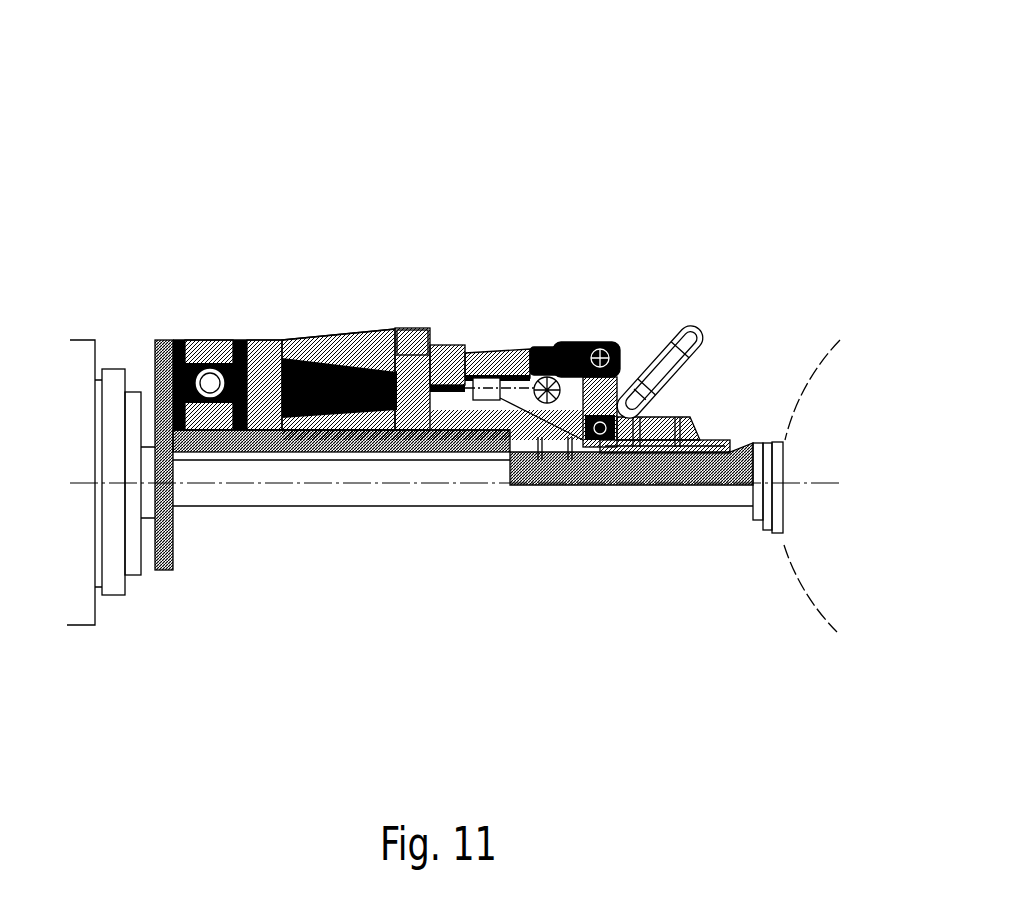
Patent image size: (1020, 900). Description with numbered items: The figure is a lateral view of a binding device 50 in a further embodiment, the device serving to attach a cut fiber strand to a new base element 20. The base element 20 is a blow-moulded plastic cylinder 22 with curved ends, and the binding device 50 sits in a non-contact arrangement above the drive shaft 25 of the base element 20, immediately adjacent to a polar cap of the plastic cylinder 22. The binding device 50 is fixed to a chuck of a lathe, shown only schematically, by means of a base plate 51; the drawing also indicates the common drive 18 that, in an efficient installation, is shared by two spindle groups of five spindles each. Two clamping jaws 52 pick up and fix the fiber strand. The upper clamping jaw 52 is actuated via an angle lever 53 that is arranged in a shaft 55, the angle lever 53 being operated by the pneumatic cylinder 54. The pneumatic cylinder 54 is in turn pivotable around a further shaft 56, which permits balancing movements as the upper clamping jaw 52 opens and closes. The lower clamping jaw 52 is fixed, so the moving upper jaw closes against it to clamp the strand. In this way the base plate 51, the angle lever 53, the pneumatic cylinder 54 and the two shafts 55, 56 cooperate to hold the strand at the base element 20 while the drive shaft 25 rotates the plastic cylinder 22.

The common drive 18 is at (73, 562).
The base element 20 is at (812, 486).
The plastic cylinder 22 is at (840, 603).
The drive shaft 25 is at (365, 495).
The binding device 50 is at (430, 150).
The base plate 51 is at (148, 355).
The clamping jaw 52 is at (693, 338).
The angle lever 53 is at (568, 342).
The pneumatic cylinder 54 is at (337, 345).
The shaft 55 is at (585, 487).
The shaft 56 is at (210, 352).